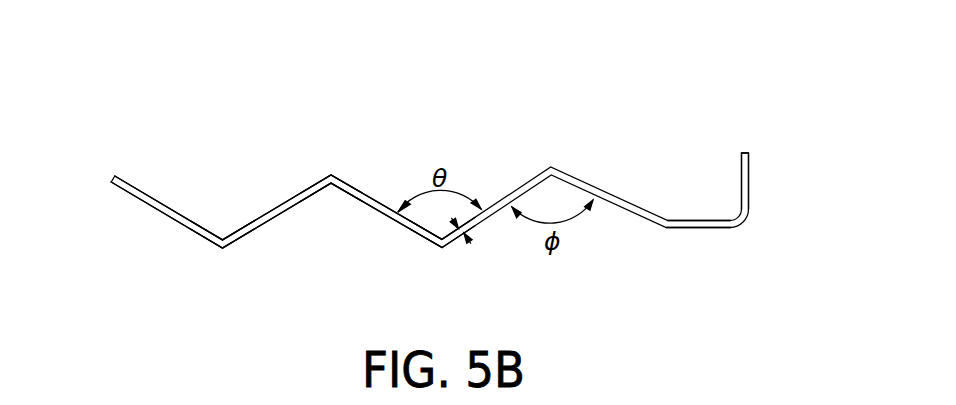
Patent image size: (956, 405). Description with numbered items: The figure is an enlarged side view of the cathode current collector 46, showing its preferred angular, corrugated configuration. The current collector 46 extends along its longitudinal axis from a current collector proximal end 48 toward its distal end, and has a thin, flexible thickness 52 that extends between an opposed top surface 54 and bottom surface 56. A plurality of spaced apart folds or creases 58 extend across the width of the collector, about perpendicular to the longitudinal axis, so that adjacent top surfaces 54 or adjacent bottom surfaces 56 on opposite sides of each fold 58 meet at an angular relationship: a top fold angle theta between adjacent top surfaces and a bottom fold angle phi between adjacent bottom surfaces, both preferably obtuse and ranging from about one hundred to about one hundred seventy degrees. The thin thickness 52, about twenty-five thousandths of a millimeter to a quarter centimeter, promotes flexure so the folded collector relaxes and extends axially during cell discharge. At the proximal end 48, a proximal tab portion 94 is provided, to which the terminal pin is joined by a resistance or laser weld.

The cathode current collector 46 is at (110, 80).
The current collector proximal end 48 is at (695, 229).
The thickness 52 is at (472, 246).
The top surface 54 is at (378, 190).
The bottom surface 56 is at (277, 217).
The fold 58 is at (222, 237).
The proximal tab portion 94 is at (749, 157).